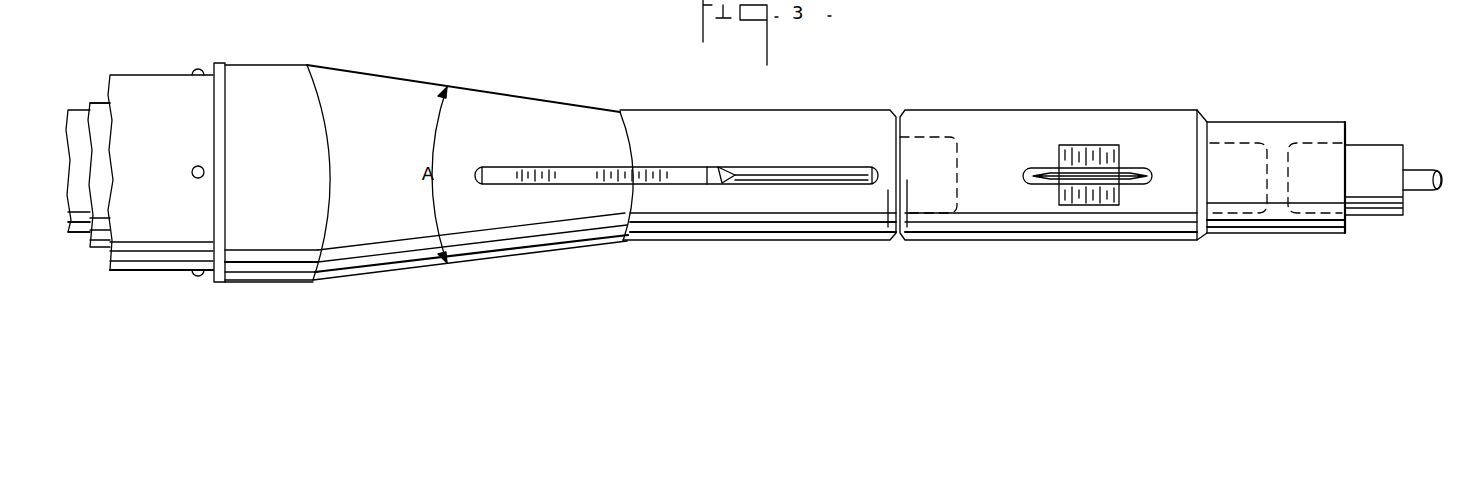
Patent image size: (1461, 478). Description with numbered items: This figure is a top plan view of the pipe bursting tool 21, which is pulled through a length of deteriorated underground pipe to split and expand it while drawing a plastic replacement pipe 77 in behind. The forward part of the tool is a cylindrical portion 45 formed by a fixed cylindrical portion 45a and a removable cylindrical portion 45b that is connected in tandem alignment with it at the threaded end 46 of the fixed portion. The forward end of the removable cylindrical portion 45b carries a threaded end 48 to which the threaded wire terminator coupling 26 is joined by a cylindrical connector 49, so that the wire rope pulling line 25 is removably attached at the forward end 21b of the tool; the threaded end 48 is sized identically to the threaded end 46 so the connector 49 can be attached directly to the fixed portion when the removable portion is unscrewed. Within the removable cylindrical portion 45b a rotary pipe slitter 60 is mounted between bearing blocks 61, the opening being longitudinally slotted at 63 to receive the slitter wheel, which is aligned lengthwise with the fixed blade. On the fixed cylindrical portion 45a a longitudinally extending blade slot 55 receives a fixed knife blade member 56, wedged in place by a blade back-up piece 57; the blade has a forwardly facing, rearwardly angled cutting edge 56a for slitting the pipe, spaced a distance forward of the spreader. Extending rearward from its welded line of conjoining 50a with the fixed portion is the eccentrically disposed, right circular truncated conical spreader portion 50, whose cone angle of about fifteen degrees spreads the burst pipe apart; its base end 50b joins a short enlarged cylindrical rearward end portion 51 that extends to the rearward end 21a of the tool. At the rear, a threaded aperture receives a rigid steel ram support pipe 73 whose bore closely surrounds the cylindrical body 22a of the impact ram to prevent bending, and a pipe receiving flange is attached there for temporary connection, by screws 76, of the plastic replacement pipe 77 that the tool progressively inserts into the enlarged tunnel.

The pipe bursting tool 21 is at (908, 176).
The rearward end of the tool 21a is at (1205, 110).
The forward end of the tool 21b is at (266, 63).
The cylindrical body of the ram 22a is at (80, 238).
The wire rope pulling line 25 is at (1423, 170).
The coupling 26 is at (1396, 215).
The cylindrical portion 45 is at (758, 215).
The fixed cylindrical portion 45a is at (820, 243).
The removable cylindrical portion 45b is at (958, 245).
The threaded end of the fixed cylindrical portion 46 is at (925, 213).
The threaded end 48 is at (1232, 232).
The cylindrical connector 49 is at (1268, 122).
The conically shaped spreader portion 50 is at (450, 155).
The line of conjoining / truncated apex end 50a is at (630, 135).
The base end of the spreader portion 50b is at (325, 98).
The cylindrical rearward end portion 51 is at (283, 275).
The blade slot 55 is at (676, 204).
The fixed knife blade member 56 is at (711, 186).
The cutting edge 56a is at (812, 176).
The blade back-up piece 57 is at (510, 184).
The rotary pipe slitter 60 is at (1128, 174).
The bearing blocks 61 is at (1068, 157).
The longitudinal slot 63 is at (1025, 181).
The ram support pipe 73 is at (93, 103).
The screws 76 is at (198, 165).
The plastic replacement pipe 77 is at (152, 174).